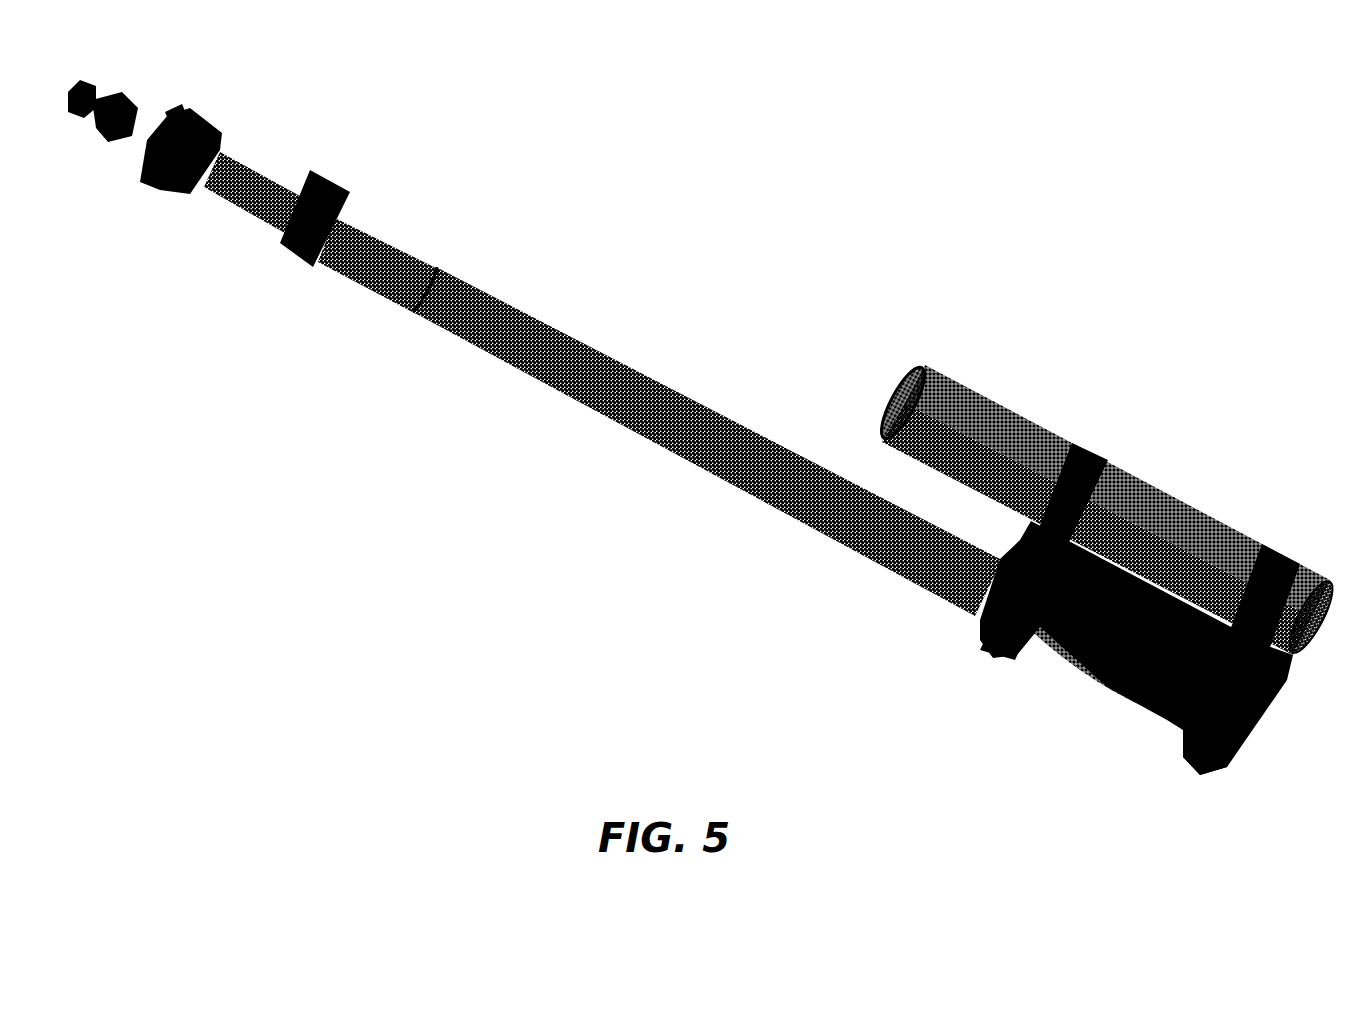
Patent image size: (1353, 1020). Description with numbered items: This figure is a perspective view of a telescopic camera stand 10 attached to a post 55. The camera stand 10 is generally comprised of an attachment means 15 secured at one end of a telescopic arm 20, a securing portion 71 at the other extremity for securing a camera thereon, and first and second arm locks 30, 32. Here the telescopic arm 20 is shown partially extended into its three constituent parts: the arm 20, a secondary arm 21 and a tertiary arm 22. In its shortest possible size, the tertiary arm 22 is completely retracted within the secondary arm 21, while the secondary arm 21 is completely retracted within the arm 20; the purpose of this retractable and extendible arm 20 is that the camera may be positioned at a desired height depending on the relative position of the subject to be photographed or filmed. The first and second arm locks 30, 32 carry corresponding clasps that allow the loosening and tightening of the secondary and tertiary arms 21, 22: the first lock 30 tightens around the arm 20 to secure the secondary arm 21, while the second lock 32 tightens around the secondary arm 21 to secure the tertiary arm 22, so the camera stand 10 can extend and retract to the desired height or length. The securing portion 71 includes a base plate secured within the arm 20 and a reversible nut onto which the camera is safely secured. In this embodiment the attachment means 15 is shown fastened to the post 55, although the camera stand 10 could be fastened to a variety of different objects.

The telescopic camera stand 10 is at (980, 212).
The attachment means 15 is at (1228, 800).
The telescopic arm 20 is at (633, 398).
The secondary arm 21 is at (401, 275).
The tertiary arm 22 is at (256, 182).
The first arm lock 30 is at (307, 258).
The second arm lock 32 is at (222, 127).
The post 55 is at (1205, 573).
The securing portion 71 is at (187, 204).